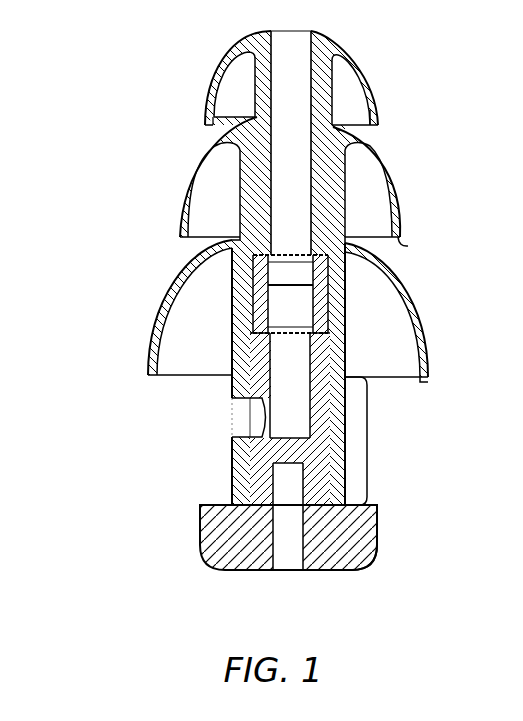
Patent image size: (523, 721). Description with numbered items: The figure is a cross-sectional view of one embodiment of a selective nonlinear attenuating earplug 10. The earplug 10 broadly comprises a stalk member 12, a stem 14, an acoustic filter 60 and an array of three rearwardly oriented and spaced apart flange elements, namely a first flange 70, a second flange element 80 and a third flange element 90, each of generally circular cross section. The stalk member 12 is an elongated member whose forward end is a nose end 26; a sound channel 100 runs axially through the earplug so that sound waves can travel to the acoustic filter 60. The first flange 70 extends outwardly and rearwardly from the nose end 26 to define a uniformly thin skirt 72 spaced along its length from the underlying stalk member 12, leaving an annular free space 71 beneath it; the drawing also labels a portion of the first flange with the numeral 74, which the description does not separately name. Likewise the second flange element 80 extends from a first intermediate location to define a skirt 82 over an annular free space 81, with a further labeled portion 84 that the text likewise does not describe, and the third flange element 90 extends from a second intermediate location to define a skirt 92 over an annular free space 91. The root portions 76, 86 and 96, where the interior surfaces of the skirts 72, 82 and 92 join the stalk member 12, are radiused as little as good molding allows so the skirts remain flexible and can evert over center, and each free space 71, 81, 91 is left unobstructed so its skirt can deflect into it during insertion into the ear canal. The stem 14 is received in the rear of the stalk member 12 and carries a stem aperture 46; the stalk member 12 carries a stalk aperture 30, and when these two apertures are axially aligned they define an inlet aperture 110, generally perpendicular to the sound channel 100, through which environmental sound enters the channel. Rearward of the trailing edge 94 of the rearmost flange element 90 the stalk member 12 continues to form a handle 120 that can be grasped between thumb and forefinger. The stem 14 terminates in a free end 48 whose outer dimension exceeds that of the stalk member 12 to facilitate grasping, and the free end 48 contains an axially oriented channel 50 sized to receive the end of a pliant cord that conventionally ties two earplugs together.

The selective attenuation earplug 10 is at (256, 304).
The stalk member 12 is at (211, 76).
The stem 14 is at (263, 534).
The nose end 26 is at (318, 32).
The stalk aperture 30 is at (176, 424).
The stem aperture 46 is at (232, 426).
The free end 48 is at (348, 573).
The axially orientated channel 50 is at (285, 566).
The acoustic filter 60 is at (242, 294).
The first flange 70 is at (379, 97).
The annular free space 71 is at (350, 105).
The skirt 72 is at (380, 117).
The first flange underside 74 is at (338, 129).
The root portion 76 is at (245, 66).
The second flange element 80 is at (396, 193).
The annular free space 81 is at (375, 208).
The skirt 82 is at (400, 227).
The second flange edge 84 is at (400, 238).
The root portion 86 is at (204, 158).
The third flange element 90 is at (420, 324).
The annular free space 91 is at (390, 328).
The skirt 92 is at (427, 358).
The trailing edge 94 is at (421, 380).
The root portion 96 is at (199, 255).
The sound channel 100 is at (290, 38).
The inlet aperture 110 is at (233, 420).
The handle 120 is at (369, 380).